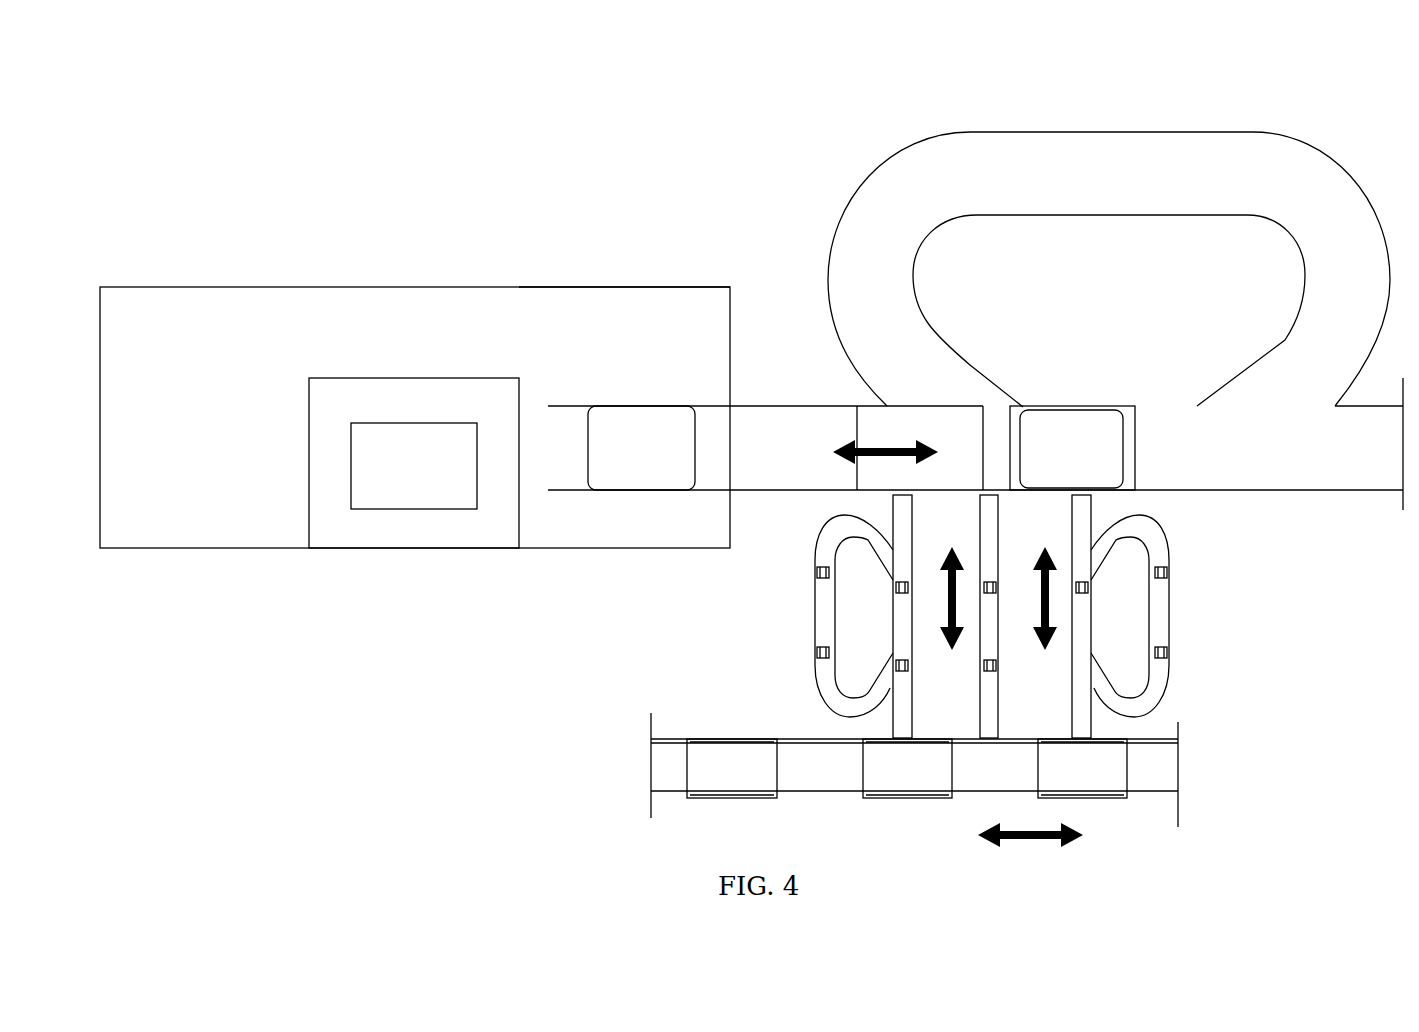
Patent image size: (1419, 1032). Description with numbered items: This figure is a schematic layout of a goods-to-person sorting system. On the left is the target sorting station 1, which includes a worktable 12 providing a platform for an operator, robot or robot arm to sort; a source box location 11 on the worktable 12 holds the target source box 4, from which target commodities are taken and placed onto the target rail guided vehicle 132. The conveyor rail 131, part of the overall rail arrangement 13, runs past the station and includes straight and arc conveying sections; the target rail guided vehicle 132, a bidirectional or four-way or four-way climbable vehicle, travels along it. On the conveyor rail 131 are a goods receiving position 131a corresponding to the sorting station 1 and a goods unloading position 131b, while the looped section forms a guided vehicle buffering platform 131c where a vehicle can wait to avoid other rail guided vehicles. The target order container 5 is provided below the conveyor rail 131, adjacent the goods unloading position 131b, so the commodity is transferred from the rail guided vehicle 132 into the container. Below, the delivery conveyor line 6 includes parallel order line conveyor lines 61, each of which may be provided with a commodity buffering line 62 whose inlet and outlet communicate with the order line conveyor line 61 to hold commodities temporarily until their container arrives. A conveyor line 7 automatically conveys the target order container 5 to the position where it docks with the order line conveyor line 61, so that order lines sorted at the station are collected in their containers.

The target sorting station 1 is at (330, 300).
The source box location 11 is at (310, 440).
The worktable 12 is at (598, 300).
The target source box 4 is at (395, 440).
The transmission mechanism 13 is at (815, 420).
The conveyor rail 131 is at (780, 490).
The goods receiving position 131a is at (570, 418).
The goods unloading position 131b is at (913, 415).
The guided vehicle buffering platform 131c is at (1082, 132).
The target rail guided vehicle 132 is at (1097, 427).
The target order container 5 is at (885, 767).
The delivery conveyor line 6 is at (1043, 616).
The order line conveyor line 61 is at (1080, 531).
The commodity buffering line 62 is at (1158, 595).
The conveyor line 7 is at (660, 770).